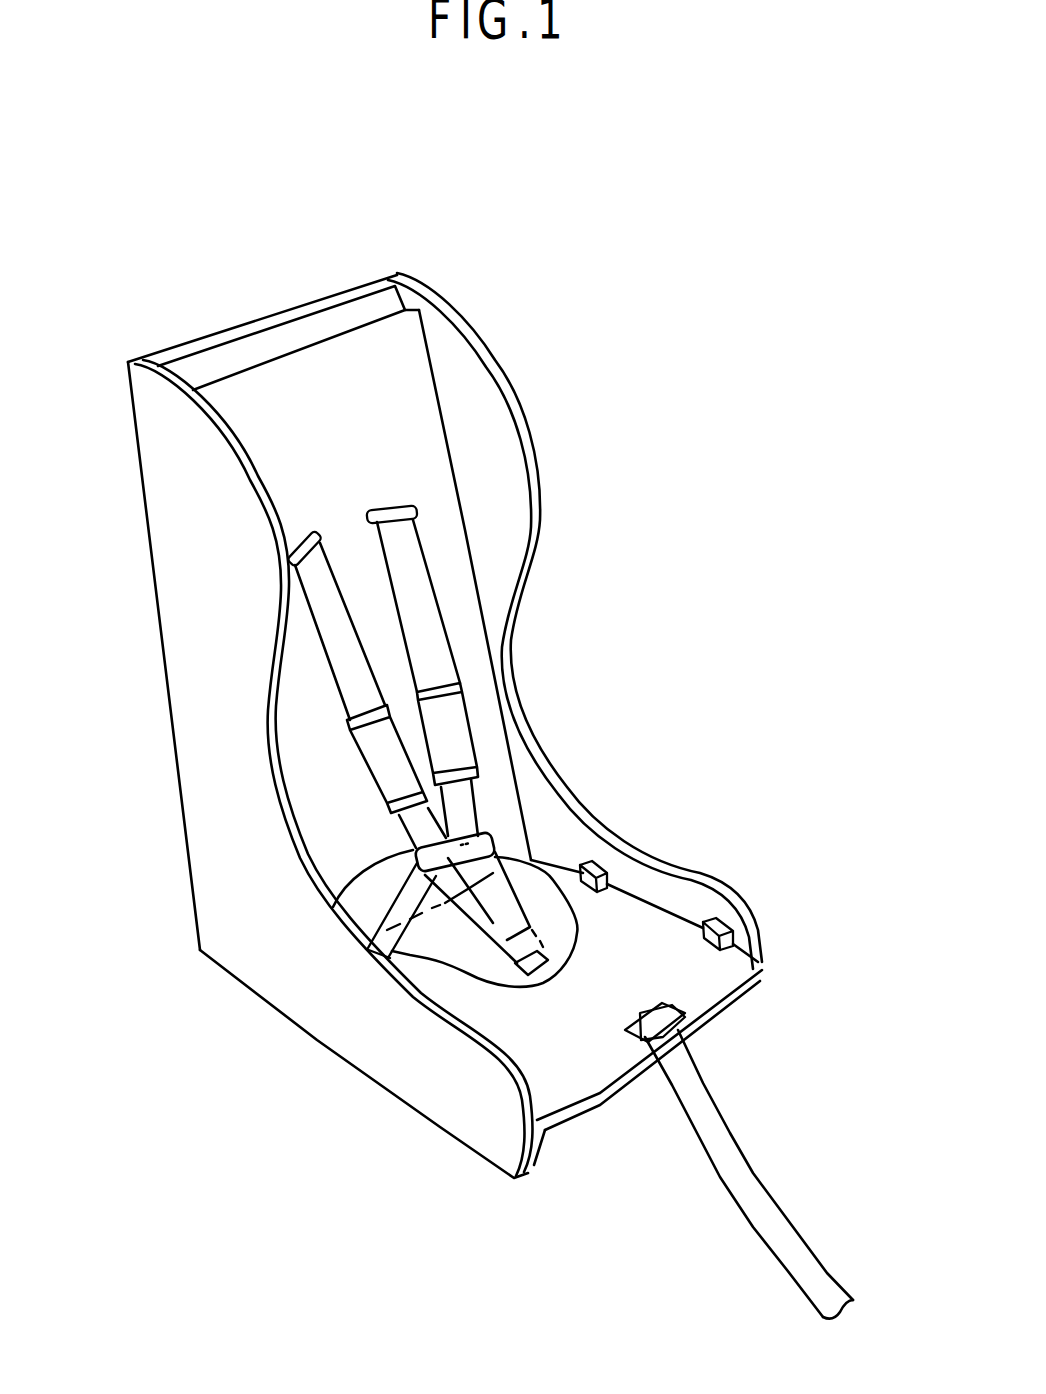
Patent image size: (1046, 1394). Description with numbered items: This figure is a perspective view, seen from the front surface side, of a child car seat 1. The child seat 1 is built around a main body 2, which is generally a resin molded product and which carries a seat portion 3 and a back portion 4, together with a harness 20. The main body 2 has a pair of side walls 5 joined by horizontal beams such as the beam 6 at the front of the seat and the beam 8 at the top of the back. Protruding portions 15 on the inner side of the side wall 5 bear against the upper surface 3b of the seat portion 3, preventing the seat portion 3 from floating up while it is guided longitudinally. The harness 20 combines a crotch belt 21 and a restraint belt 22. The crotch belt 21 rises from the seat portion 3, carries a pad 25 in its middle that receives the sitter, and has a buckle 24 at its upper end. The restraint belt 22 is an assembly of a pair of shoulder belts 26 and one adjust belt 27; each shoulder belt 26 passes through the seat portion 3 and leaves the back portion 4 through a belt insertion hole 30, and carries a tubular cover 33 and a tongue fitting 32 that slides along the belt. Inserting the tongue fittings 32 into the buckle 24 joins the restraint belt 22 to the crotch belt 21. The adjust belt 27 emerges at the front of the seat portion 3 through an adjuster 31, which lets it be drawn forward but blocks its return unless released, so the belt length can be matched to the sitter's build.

The child seat 1 is at (674, 244).
The main body 2 is at (503, 347).
The seat portion 3 is at (745, 962).
The upper surface of the seat portion 3b is at (648, 953).
The back portion 4 is at (413, 360).
The side wall 5 is at (181, 676).
The horizontal beam 6 is at (547, 1140).
The horizontal beam 8 is at (308, 330).
The protruding portion 15 is at (600, 866).
The harness 20 is at (478, 642).
The crotch belt 21 is at (438, 975).
The restraint belt 22 is at (365, 793).
The buckle 24 is at (500, 853).
The pad 25 is at (480, 970).
The shoulder belt 26 is at (422, 580).
The adjust belt 27 is at (728, 1178).
The belt insertion hole 30 is at (418, 498).
The adjuster 31 is at (688, 1006).
The tongue fitting 32 is at (480, 800).
The tubular cover 33 is at (457, 720).